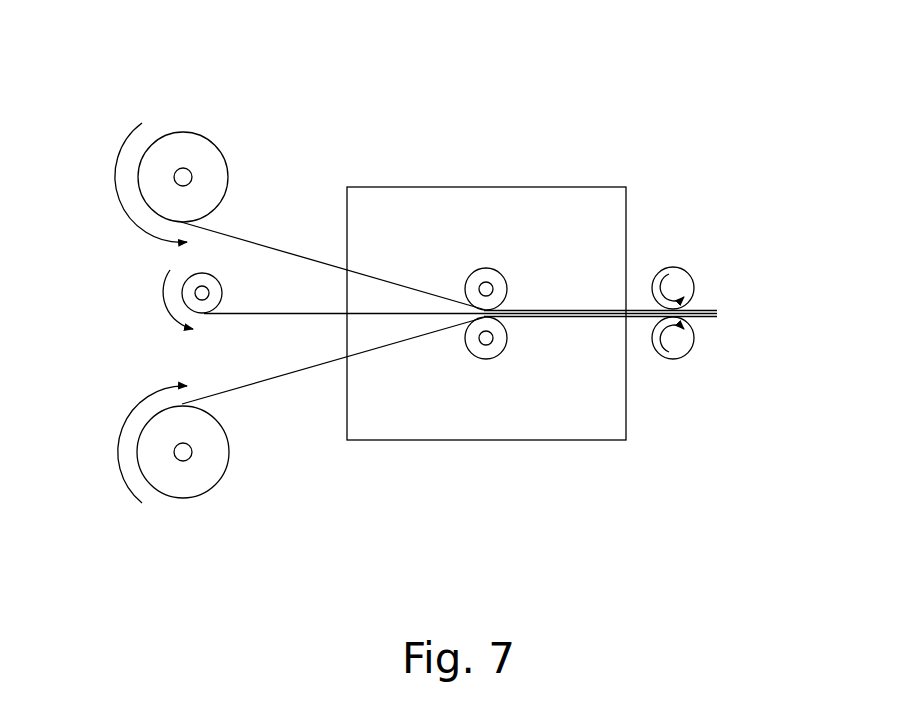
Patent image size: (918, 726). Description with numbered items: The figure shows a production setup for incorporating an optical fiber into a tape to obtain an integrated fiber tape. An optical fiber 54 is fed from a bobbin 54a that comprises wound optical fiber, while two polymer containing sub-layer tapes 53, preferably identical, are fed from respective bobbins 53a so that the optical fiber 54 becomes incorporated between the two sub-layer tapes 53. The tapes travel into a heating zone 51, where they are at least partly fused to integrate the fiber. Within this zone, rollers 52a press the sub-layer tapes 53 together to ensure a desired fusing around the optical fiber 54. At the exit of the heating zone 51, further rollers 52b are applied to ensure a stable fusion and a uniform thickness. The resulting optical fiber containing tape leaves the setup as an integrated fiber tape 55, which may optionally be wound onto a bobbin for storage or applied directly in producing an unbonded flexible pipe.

The heating zone 51 is at (467, 187).
The rollers 52a is at (470, 280).
The further rollers 52b is at (675, 267).
The sub-layer tape 53 is at (290, 254).
The bobbin 53a is at (172, 131).
The optical fiber 54 is at (228, 317).
The bobbin 54a is at (190, 274).
The integrated fiber tape 55 is at (700, 310).